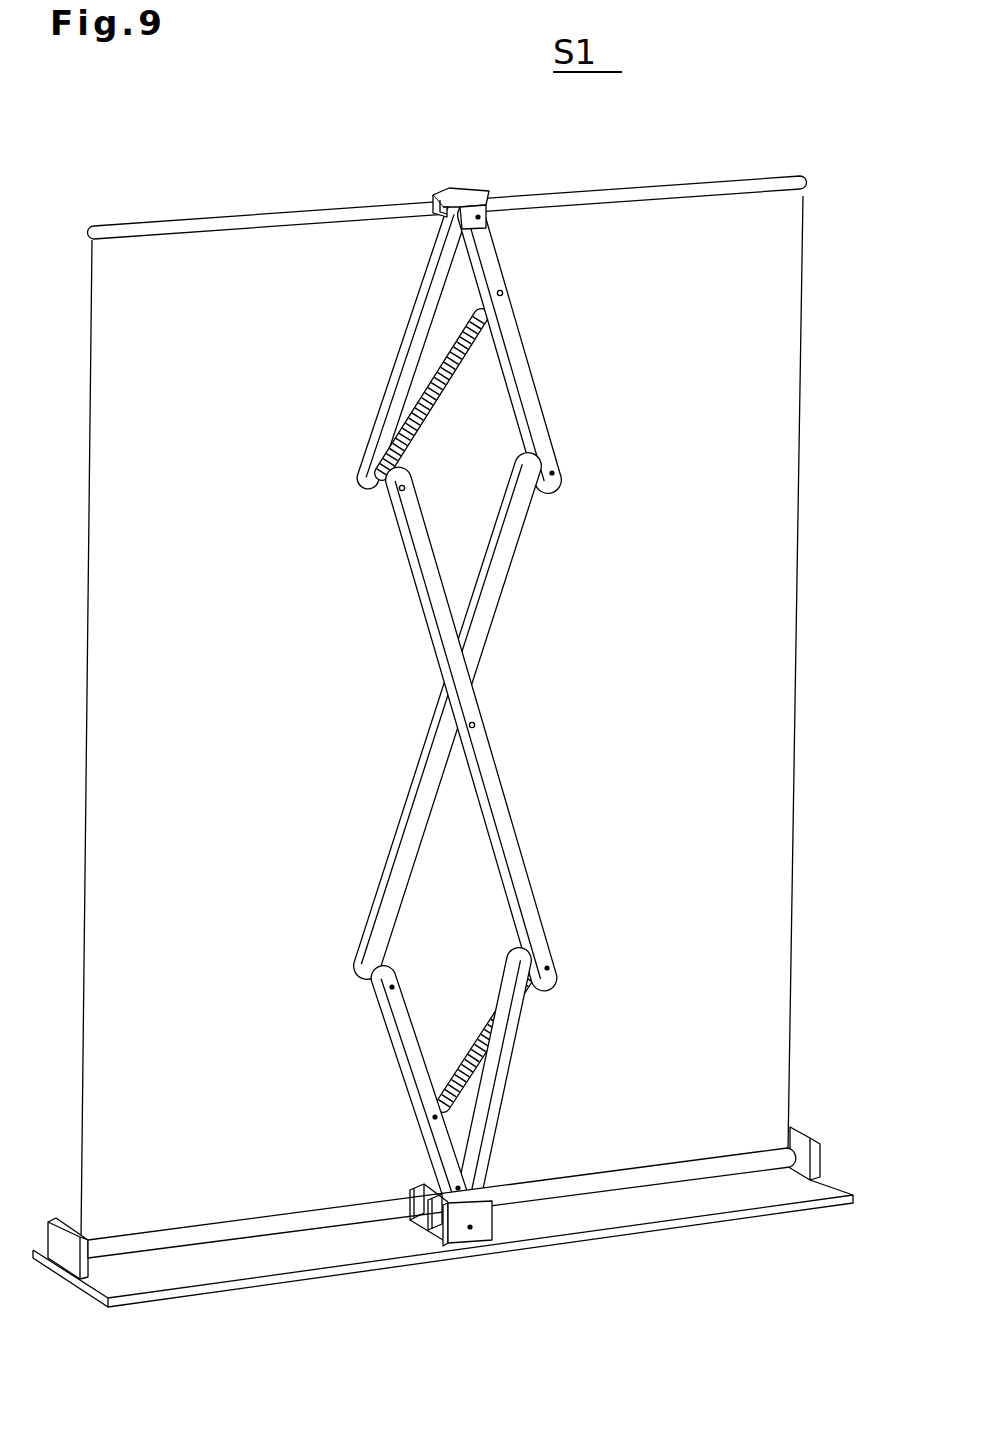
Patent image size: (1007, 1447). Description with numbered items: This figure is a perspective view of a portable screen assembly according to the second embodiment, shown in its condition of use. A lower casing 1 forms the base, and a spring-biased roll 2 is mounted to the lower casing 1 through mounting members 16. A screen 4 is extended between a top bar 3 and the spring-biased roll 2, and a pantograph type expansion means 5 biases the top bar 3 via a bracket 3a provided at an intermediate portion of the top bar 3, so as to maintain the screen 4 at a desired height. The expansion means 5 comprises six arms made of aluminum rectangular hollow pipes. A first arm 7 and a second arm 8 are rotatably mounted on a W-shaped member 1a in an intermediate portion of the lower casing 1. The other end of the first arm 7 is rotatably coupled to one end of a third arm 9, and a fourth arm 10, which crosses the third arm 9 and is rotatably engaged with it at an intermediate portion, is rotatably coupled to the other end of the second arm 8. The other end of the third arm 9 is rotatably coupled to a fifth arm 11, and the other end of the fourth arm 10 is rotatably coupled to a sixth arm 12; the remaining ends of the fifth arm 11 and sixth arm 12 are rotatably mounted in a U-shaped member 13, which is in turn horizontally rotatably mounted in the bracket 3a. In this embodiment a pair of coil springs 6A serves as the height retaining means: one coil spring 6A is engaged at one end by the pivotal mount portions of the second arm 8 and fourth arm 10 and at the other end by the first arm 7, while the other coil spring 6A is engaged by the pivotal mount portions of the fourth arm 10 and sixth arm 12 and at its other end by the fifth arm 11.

The lower casing 1 is at (735, 1197).
The W-shaped member 1a is at (458, 1237).
The spring-biased roll 2 is at (757, 1158).
The top bar 3 is at (606, 187).
The bracket 3a is at (464, 194).
The screen 4 is at (763, 588).
The expansion means 5 is at (562, 393).
The coil spring 6A is at (430, 395).
The first arm 7 is at (410, 1092).
The second arm 8 is at (507, 1080).
The third arm 9 is at (402, 825).
The fourth arm 10 is at (510, 817).
The fifth arm 11 is at (525, 355).
The sixth arm 12 is at (402, 360).
The U-shaped member 13 is at (486, 220).
The mounting member 16 is at (810, 1138).